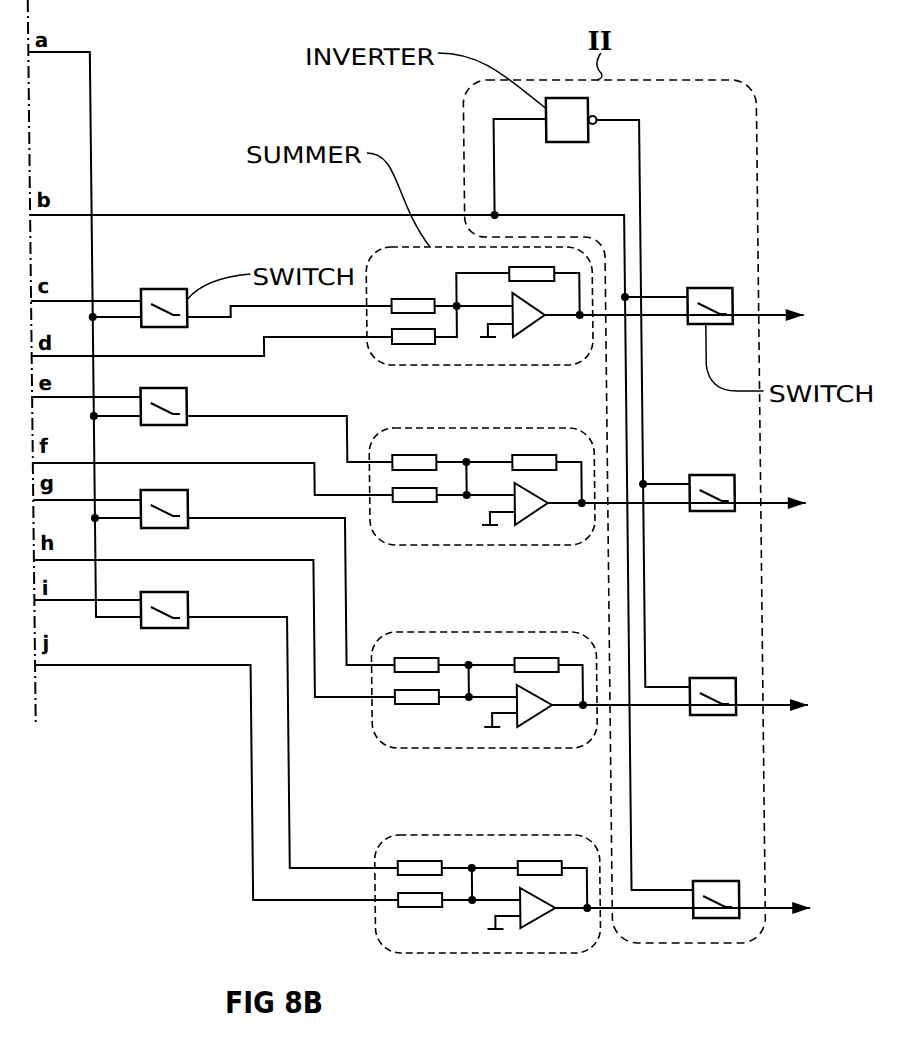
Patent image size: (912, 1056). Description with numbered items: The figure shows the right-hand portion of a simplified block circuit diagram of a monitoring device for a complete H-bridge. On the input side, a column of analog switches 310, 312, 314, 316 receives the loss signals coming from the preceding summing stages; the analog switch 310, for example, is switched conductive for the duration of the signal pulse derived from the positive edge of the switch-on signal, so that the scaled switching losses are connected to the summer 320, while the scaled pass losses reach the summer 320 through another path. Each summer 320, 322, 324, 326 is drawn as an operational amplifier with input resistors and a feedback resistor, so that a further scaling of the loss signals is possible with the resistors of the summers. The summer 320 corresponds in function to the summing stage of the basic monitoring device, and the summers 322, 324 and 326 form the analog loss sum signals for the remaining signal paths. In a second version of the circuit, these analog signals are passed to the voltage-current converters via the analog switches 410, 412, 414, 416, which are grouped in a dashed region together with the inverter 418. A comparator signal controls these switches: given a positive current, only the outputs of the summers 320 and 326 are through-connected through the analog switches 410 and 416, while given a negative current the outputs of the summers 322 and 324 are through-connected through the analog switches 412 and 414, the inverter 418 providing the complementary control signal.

The analog switch 310 is at (163, 288).
The analog switch 312 is at (167, 388).
The analog switch 314 is at (193, 502).
The analog switch 316 is at (170, 592).
The summer 320 is at (390, 248).
The summer 322 is at (418, 428).
The summer 324 is at (420, 632).
The summer 326 is at (420, 835).
The analog switch 410 is at (715, 288).
The analog switch 412 is at (715, 475).
The analog switch 414 is at (713, 678).
The analog switch 416 is at (714, 881).
The inverter 418 is at (568, 143).